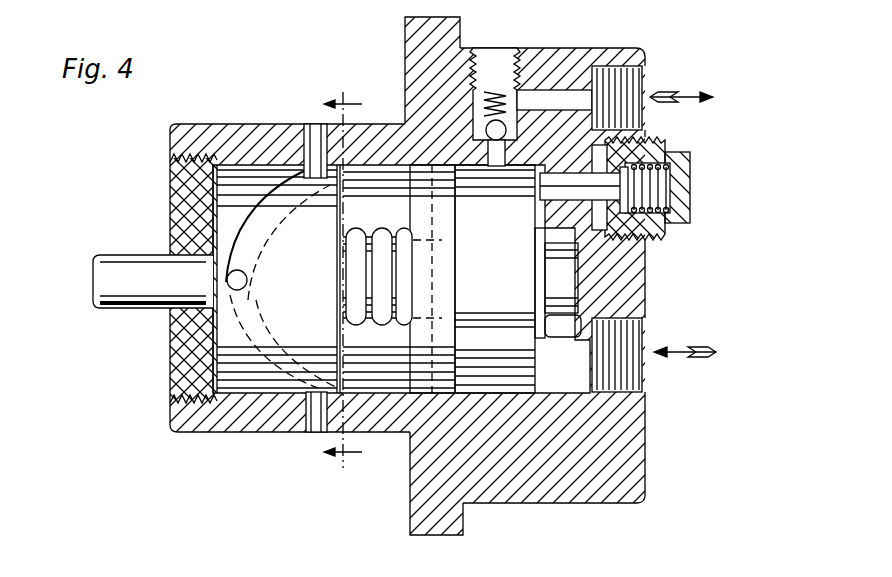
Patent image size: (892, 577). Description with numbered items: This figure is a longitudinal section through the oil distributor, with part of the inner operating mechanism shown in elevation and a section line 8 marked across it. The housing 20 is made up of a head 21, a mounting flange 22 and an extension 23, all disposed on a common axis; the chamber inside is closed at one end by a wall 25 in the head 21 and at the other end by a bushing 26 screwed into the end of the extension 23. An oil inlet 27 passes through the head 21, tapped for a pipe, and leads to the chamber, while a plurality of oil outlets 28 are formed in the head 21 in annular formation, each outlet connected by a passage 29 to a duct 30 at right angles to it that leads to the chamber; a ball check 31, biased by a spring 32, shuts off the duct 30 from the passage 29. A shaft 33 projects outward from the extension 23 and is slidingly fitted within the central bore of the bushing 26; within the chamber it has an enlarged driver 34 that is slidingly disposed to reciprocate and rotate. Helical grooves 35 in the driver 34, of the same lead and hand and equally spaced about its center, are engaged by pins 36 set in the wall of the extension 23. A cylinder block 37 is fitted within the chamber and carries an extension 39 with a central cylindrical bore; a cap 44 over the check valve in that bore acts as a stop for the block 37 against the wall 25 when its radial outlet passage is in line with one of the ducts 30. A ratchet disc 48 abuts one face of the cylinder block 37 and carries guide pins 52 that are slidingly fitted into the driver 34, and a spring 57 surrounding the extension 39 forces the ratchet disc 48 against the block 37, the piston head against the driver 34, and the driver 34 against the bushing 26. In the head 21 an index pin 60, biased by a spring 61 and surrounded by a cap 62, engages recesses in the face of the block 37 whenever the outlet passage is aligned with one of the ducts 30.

The section line 8- 8 is at (343, 278).
The housing 20 is at (410, 122).
The head 21 is at (583, 60).
The mounting flange 22 is at (418, 510).
The extension 23 is at (193, 432).
The wall 25 is at (635, 419).
The bushing 26 is at (175, 355).
The oil inlet 27 is at (637, 334).
The oil outlets 28 is at (642, 73).
The passage 29 is at (527, 98).
The duct 30 is at (482, 136).
The ball check 31 is at (490, 158).
The spring 32 is at (474, 122).
The shaft 33 is at (130, 263).
The driver 34 is at (227, 223).
The helical grooves 35 is at (290, 197).
The pins 36 is at (307, 124).
The cylinder block 37 is at (495, 279).
The extension 39 is at (366, 236).
The cap 44 is at (565, 277).
The ratchet disc 48 is at (418, 210).
The guide pins 52 is at (378, 378).
The spring 57 is at (384, 236).
The index pin 60 is at (570, 177).
The spring 61 is at (660, 150).
The cap 62 is at (688, 173).